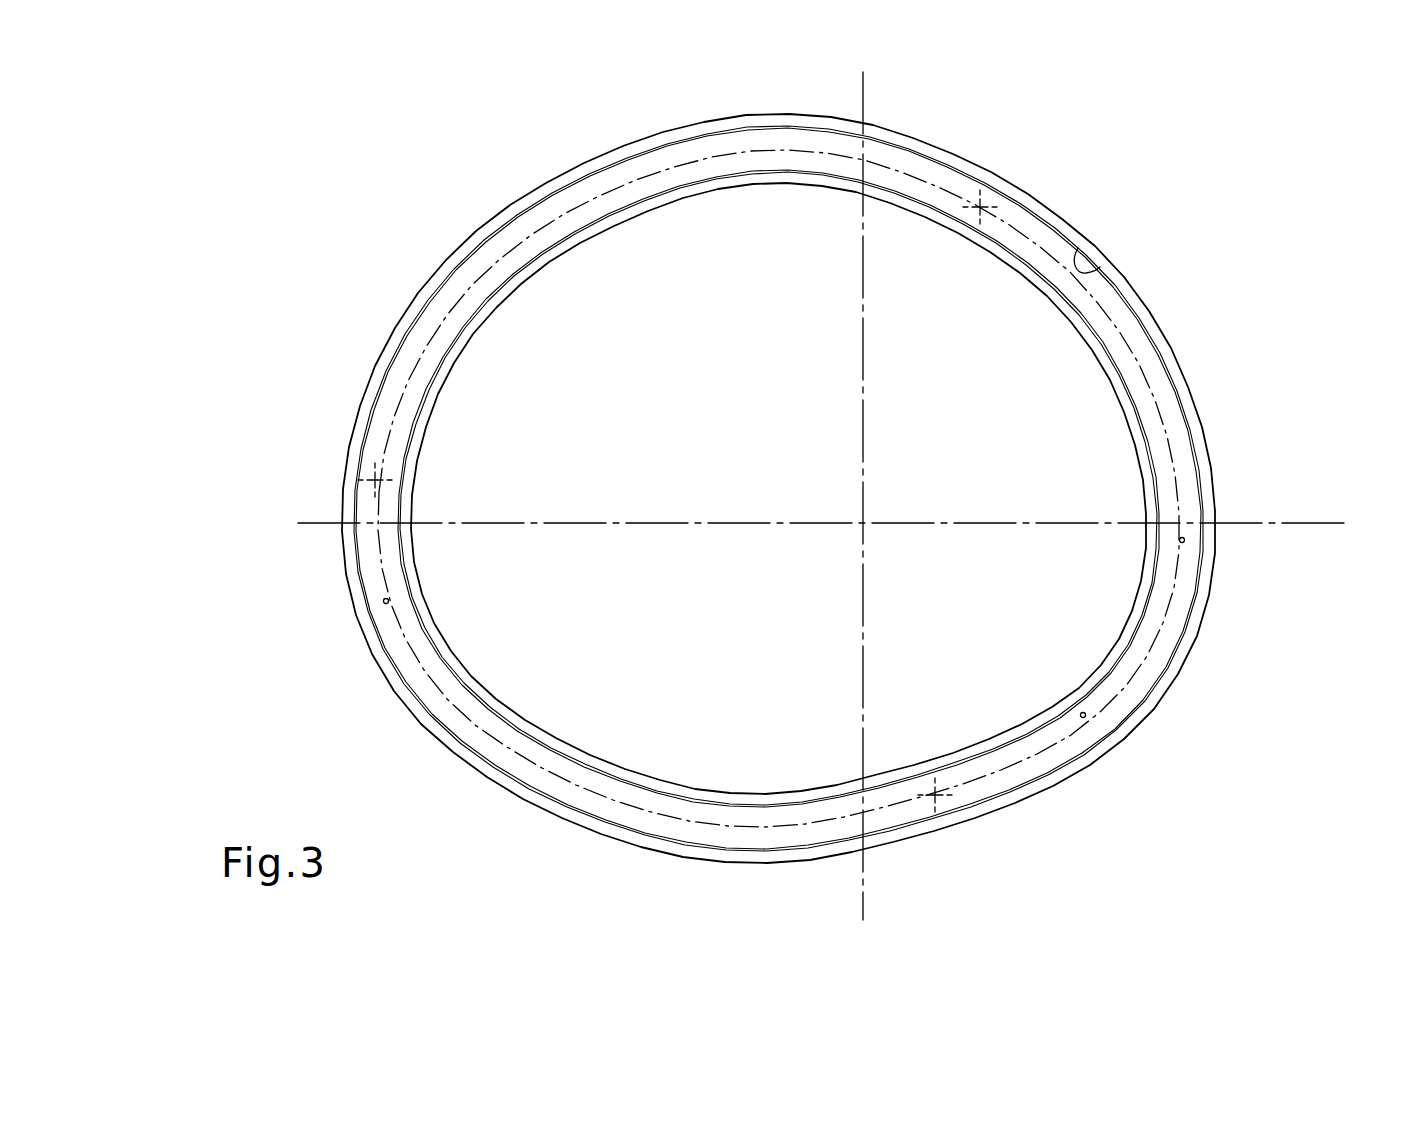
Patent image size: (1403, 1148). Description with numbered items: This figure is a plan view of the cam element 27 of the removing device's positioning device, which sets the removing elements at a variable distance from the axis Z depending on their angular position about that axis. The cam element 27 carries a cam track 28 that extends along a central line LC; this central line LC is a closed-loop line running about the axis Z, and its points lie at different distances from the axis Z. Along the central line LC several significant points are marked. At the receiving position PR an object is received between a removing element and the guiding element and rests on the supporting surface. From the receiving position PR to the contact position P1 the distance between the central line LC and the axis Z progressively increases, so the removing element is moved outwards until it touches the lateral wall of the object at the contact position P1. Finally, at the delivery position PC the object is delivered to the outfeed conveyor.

The cam element 27 is at (1148, 322).
The cam track 28 is at (1090, 272).
The central line LC is at (588, 198).
The axis Z is at (863, 523).
The contact position P1 is at (1184, 541).
The receiving position PR is at (1084, 717).
The delivery position PC is at (384, 602).